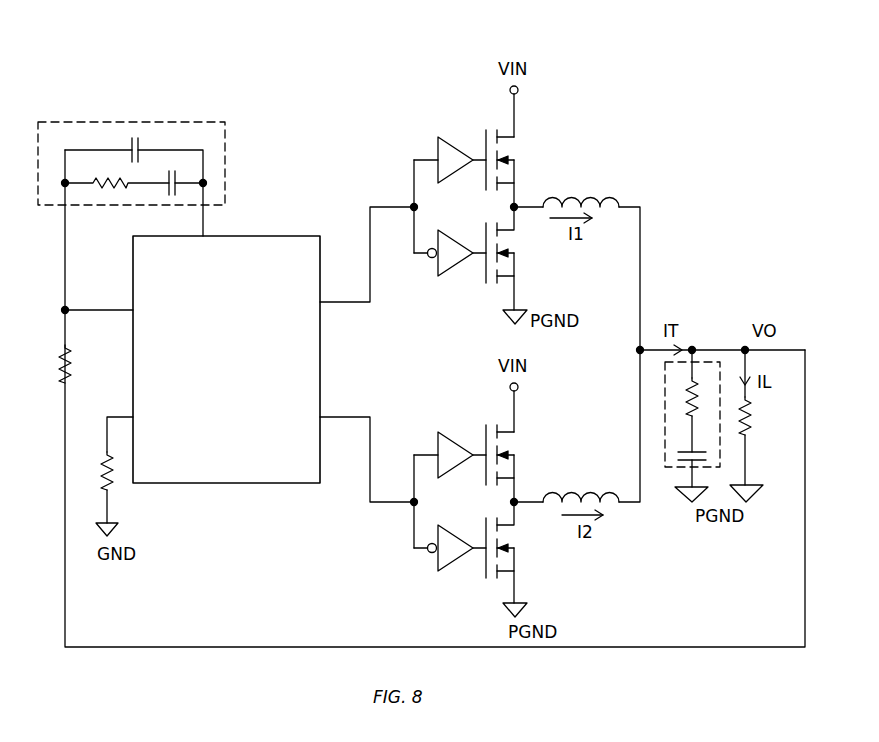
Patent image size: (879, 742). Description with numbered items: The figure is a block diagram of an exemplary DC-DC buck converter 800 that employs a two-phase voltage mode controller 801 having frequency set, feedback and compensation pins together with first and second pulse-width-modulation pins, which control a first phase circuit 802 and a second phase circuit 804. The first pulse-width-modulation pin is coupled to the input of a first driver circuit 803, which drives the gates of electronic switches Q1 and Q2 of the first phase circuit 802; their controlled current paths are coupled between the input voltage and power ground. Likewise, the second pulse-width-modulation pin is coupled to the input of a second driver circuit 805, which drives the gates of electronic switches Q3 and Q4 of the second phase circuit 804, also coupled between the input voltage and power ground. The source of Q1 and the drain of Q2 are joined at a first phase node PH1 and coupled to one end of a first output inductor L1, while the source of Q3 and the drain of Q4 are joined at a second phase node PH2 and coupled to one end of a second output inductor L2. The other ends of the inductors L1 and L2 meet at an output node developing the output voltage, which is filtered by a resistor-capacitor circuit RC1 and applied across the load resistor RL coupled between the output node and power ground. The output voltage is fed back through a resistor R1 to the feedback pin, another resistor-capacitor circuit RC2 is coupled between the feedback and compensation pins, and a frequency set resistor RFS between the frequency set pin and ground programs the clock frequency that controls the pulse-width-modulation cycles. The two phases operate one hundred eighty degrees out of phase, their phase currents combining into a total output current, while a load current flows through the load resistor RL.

The DC-DC buck converter 800 is at (644, 84).
The two-phase voltage mode controller 801 is at (233, 483).
The first phase circuit 802 is at (476, 215).
The first driver circuit 803 is at (421, 166).
The second phase circuit 804 is at (471, 506).
The second driver circuit 805 is at (424, 456).
The resistor-capacitor circuit RC2 is at (225, 137).
The resistor-capacitor circuit RC1 is at (665, 453).
The resistor R1 is at (83, 364).
The frequency set resistor RFS is at (124, 480).
The load resistor RL is at (757, 426).
The electronic switch Q1 is at (516, 168).
The electronic switch Q2 is at (516, 258).
The electronic switch Q3 is at (519, 463).
The electronic switch Q4 is at (519, 552).
The first output inductor L1 is at (582, 196).
The second output inductor L2 is at (582, 492).
The first phase node PH1 is at (518, 203).
The second phase node PH2 is at (518, 500).